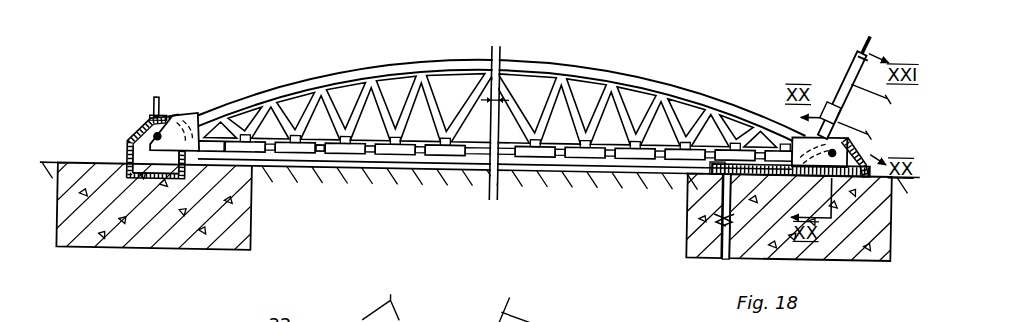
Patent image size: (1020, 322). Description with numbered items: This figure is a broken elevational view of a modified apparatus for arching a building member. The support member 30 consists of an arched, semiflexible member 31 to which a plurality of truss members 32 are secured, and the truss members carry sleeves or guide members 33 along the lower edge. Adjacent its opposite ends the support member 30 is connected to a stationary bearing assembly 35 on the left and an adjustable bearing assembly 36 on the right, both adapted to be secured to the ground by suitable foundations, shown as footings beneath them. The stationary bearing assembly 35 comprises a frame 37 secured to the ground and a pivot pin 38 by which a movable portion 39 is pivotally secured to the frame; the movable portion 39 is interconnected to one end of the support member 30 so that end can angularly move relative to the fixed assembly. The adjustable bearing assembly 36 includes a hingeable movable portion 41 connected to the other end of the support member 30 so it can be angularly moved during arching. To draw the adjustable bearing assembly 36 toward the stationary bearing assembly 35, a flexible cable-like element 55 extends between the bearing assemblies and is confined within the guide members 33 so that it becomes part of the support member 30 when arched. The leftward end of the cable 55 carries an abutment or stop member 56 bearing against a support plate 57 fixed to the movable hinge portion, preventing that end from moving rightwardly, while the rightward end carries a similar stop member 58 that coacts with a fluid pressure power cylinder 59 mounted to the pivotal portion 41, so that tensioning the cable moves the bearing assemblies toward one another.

The support member 30 is at (502, 116).
The arched, semiflexible member 31 is at (624, 77).
The truss members 32 is at (390, 97).
The sleeves or guide members 33 is at (388, 150).
The stationary bearing assembly 35 is at (206, 133).
The adjustable bearing assembly 36 is at (872, 153).
The frame 37 is at (127, 148).
The pivot pin 38 is at (170, 141).
The movable portion 39 is at (189, 123).
The hingeable movable portion 41 is at (803, 138).
The flexible cable-like element 55 is at (156, 98).
The abutment or stop member 56 is at (153, 116).
The support plate 57 is at (176, 112).
The stop member 58 is at (854, 70).
The fluid pressure power cylinder 59 is at (844, 90).